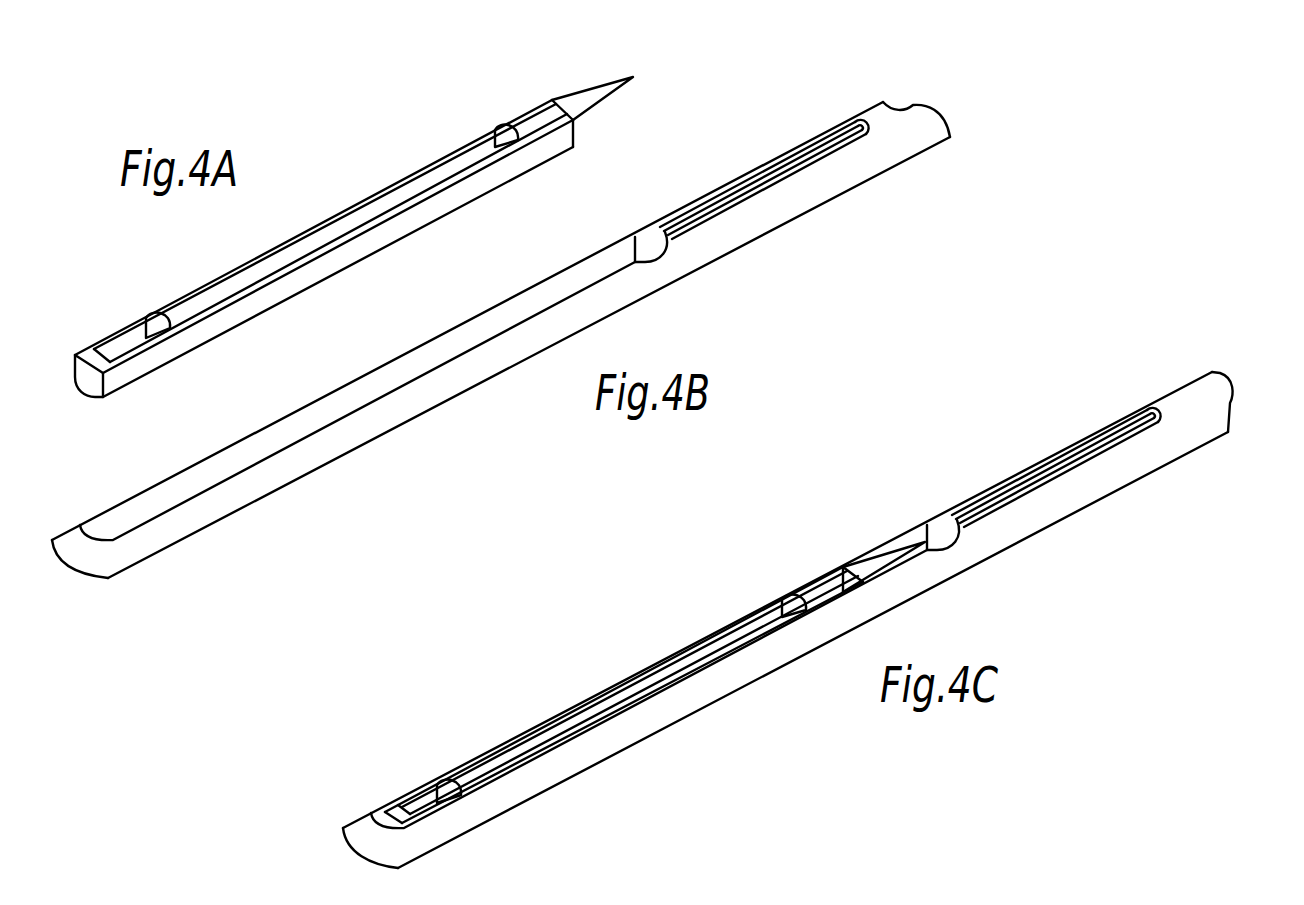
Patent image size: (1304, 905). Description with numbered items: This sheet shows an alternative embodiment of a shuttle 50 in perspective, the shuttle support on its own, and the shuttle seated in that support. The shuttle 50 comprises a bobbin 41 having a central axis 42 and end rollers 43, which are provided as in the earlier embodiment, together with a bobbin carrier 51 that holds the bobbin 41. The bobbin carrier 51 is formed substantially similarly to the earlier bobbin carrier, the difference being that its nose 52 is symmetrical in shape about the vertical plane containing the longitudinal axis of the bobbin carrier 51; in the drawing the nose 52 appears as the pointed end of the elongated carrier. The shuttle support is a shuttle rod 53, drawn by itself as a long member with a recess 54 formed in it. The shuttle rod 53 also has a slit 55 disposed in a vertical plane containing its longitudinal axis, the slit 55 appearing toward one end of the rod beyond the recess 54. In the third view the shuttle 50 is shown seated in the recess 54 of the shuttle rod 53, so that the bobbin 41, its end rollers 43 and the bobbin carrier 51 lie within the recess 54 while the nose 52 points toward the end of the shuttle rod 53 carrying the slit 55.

In FIG. 4A, the shuttle 50 is at (354, 213).
In FIG. 4A, the bobbin 41 is at (318, 247).
In FIG. 4A, the central axis 42 is at (410, 200).
In FIG. 4A, the end rollers 43 is at (158, 332).
In FIG. 4A, the bobbin carrier 51 is at (537, 155).
In FIG. 4A, the nose 52 is at (586, 98).
In FIG. 4B, the shuttle rod 53 is at (733, 233).
In FIG. 4B, the recess 54 is at (425, 365).
In FIG. 4B, the slit 55 is at (772, 178).